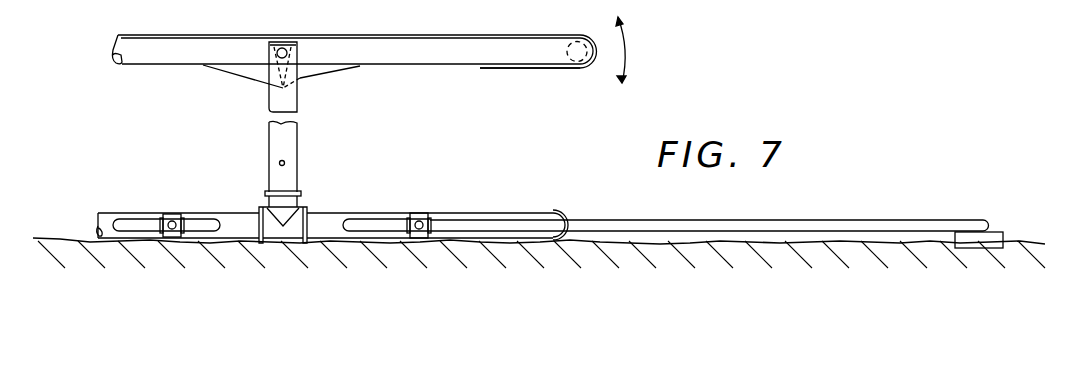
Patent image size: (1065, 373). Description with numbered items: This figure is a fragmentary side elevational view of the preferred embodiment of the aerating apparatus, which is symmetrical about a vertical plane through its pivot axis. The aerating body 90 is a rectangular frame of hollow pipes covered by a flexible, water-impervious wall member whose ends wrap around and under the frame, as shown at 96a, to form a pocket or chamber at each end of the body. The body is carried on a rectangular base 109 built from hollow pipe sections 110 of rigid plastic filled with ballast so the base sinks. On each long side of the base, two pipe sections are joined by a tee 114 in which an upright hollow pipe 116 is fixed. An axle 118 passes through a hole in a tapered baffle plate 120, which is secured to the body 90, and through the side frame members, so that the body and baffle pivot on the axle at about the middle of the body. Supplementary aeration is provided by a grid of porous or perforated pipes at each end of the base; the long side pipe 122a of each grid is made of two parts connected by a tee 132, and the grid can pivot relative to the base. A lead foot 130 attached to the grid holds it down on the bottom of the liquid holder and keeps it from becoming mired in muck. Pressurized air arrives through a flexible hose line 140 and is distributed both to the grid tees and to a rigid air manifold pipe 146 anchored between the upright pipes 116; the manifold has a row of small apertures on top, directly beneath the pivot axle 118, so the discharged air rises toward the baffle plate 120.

The aerating body 90 is at (483, 28).
The wall member end 96a is at (557, 68).
The rectangular base 109 is at (196, 194).
The hollow pipe section 110 is at (330, 218).
The tee 114 is at (265, 193).
The upright hollow pipe 116 is at (297, 102).
The axle 118 is at (287, 52).
The baffle plate 120 is at (305, 82).
The grid side pipe 122a is at (127, 222).
The lead foot 130 is at (992, 232).
The tee 132 is at (178, 214).
The flexible hose line 140 is at (290, 3).
The air manifold pipe 146 is at (286, 163).